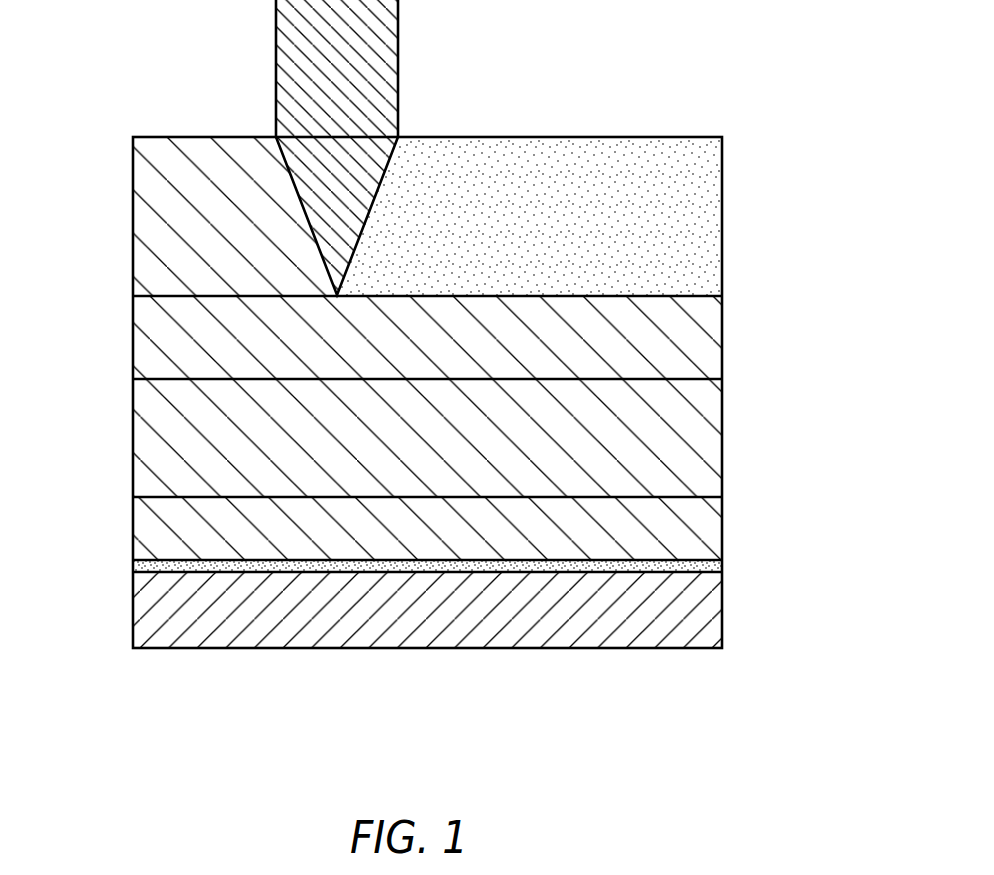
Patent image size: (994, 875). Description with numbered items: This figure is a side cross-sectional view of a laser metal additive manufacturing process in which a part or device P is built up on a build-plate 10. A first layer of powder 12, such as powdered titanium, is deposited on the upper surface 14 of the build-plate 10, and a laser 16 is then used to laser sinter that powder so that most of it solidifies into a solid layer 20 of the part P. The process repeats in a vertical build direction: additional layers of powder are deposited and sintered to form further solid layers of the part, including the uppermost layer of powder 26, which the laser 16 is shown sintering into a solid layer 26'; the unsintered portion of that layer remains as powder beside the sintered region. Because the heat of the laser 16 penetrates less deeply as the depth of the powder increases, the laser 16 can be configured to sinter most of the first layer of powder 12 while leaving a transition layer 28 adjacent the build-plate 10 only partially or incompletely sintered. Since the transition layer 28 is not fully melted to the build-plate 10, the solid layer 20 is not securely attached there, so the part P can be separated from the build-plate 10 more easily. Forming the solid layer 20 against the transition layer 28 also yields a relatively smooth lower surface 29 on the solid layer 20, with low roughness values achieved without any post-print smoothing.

The build-plate 10 is at (646, 674).
The layer of powder 12 is at (728, 498).
The upper surface 14 is at (413, 572).
The laser 16 is at (410, 62).
The solid layer 20 is at (153, 532).
The layer of powder 26 is at (580, 216).
The solid layer 26' is at (233, 175).
The transition layer 28 is at (133, 567).
The lower surface 29 is at (653, 560).
The part or device P is at (738, 312).